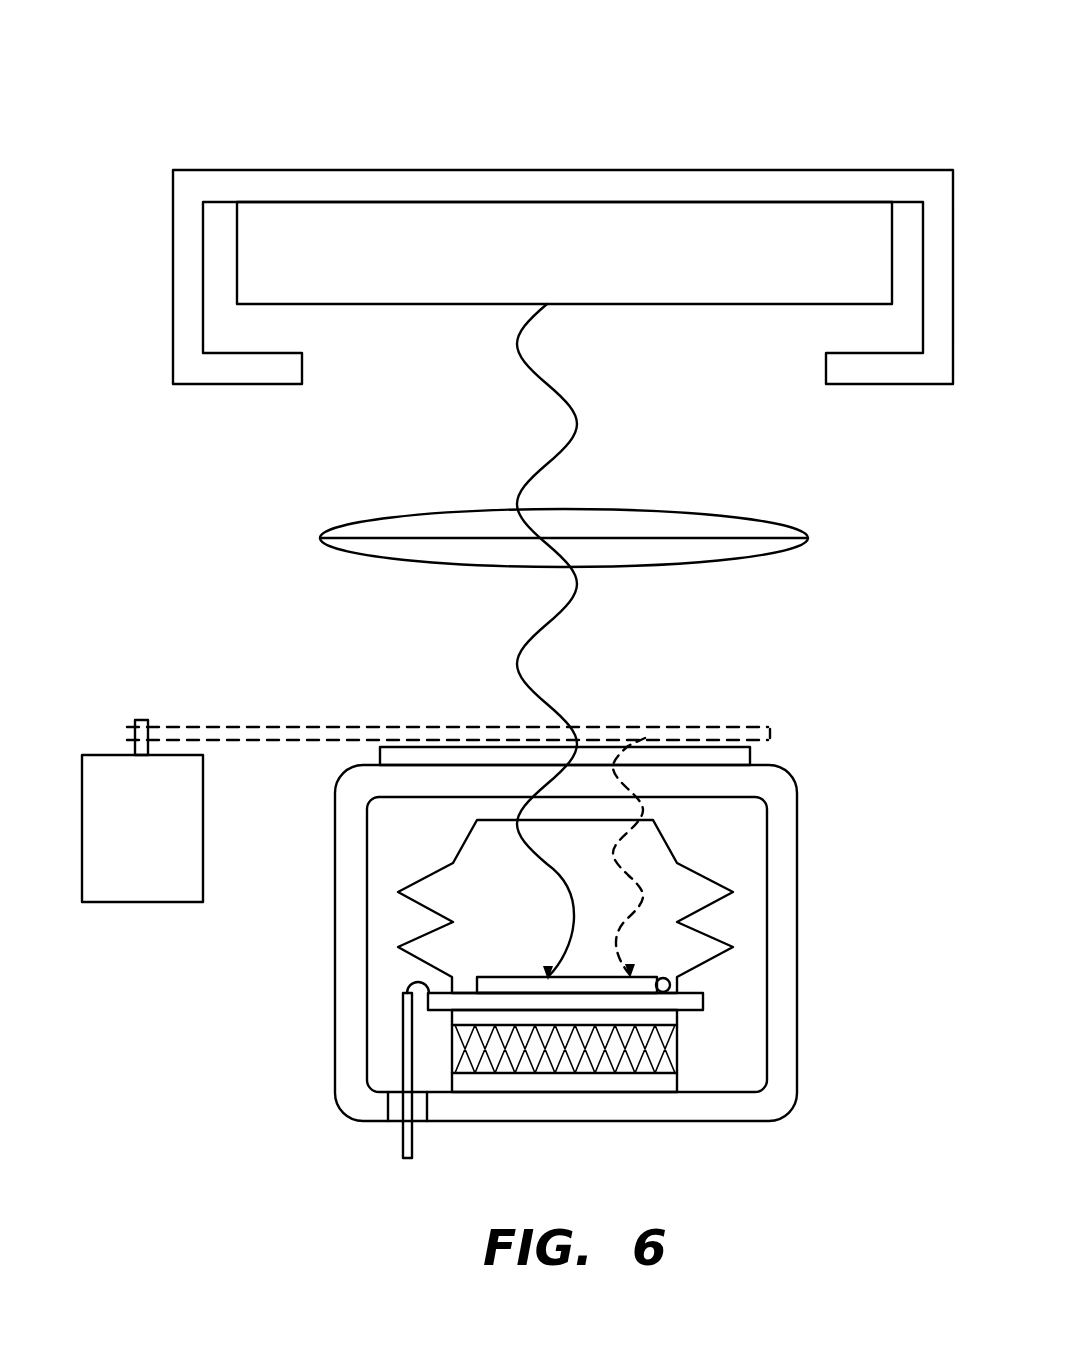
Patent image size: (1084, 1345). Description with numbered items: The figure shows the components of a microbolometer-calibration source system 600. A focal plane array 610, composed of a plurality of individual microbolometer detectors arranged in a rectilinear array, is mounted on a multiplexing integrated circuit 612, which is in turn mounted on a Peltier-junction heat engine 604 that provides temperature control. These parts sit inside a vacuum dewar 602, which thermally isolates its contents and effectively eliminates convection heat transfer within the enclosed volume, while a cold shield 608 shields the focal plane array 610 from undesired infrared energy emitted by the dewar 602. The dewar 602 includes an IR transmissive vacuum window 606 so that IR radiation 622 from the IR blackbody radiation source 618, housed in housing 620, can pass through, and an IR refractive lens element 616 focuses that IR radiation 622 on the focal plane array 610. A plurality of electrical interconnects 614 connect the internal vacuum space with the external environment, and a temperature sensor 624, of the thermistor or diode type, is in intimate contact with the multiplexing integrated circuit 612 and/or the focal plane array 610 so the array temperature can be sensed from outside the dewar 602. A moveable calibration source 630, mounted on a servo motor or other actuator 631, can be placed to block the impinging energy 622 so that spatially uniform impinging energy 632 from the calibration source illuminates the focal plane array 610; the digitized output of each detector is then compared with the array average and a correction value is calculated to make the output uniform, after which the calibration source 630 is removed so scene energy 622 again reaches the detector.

The microbolometer-calibration source system 600 is at (815, 80).
The vacuum dewar 602 is at (785, 862).
The Peltier-junction heat engine 604 is at (670, 1017).
The IR transmissive vacuum window 606 is at (737, 755).
The cold shield 608 is at (717, 903).
The focal plane array 610 is at (510, 985).
The multiplexing integrated circuit 612 is at (703, 1000).
The electrical interconnects 614 is at (403, 1001).
The IR refractive lens element 616 is at (433, 520).
The IR blackbody radiation source 618 is at (715, 304).
The housing 620 is at (885, 384).
The IR radiation 622 is at (517, 360).
The temperature sensor 624 is at (671, 984).
The moveable calibration source 630 is at (238, 727).
The servo motor or other actuator 631 is at (167, 835).
The impinging energy from the calibration source 632 is at (615, 857).